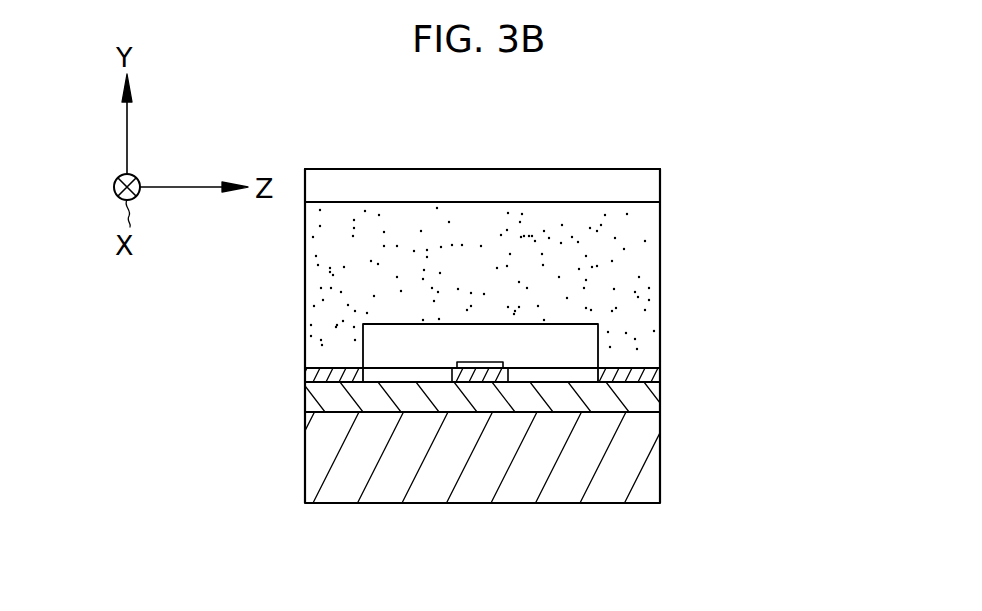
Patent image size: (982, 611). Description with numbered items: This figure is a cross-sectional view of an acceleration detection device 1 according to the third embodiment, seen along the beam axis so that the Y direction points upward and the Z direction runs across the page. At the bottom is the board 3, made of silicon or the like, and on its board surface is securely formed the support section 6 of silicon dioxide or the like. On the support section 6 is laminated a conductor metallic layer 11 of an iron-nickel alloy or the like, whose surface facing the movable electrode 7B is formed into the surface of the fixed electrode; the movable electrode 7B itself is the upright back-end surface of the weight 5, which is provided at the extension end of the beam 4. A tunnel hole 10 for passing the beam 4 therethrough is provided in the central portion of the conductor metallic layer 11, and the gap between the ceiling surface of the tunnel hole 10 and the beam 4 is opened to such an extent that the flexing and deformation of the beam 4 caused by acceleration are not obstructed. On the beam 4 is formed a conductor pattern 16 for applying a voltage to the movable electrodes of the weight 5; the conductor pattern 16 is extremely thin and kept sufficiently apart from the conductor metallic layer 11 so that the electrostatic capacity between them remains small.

The acceleration detection device 1 is at (743, 152).
The board 3 is at (646, 462).
The beam 4 is at (459, 373).
The weight 5 is at (438, 178).
The support section 6 is at (648, 398).
The movable electrode 7B is at (525, 177).
The tunnel hole 10 is at (583, 352).
The conductor metallic layer 11 is at (637, 280).
The conductor pattern 16 is at (480, 358).